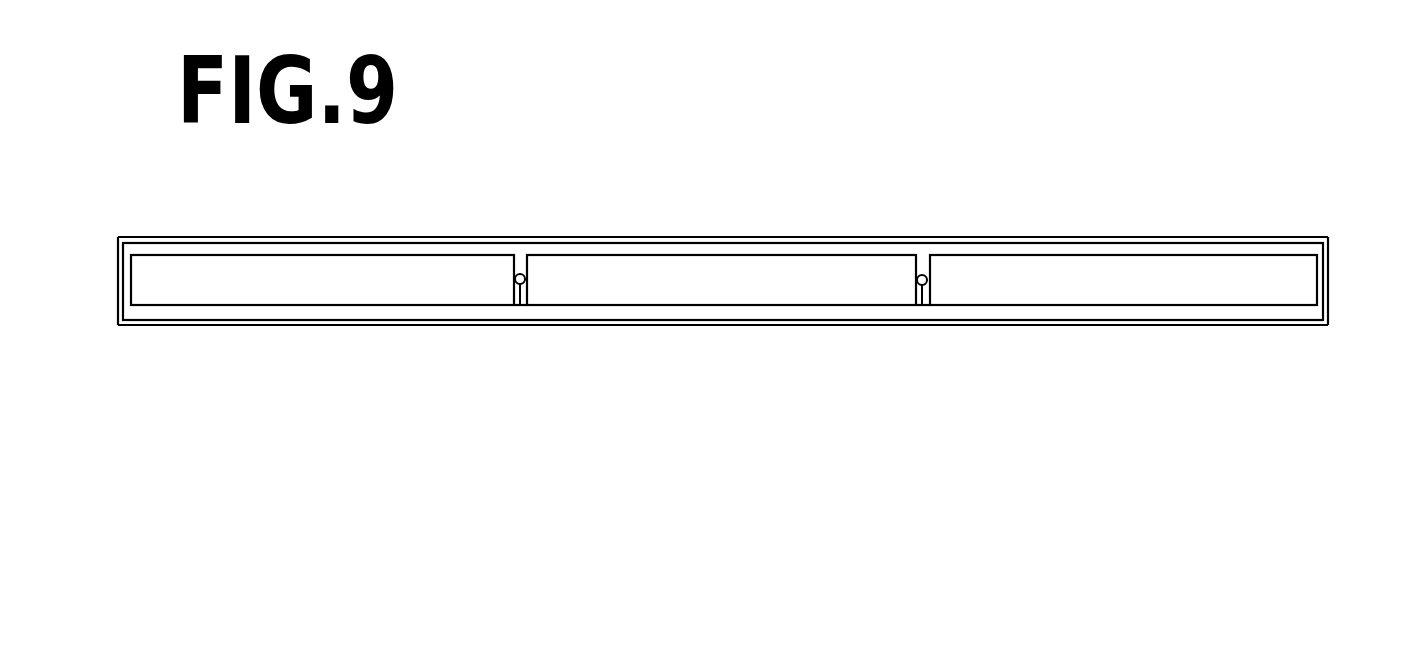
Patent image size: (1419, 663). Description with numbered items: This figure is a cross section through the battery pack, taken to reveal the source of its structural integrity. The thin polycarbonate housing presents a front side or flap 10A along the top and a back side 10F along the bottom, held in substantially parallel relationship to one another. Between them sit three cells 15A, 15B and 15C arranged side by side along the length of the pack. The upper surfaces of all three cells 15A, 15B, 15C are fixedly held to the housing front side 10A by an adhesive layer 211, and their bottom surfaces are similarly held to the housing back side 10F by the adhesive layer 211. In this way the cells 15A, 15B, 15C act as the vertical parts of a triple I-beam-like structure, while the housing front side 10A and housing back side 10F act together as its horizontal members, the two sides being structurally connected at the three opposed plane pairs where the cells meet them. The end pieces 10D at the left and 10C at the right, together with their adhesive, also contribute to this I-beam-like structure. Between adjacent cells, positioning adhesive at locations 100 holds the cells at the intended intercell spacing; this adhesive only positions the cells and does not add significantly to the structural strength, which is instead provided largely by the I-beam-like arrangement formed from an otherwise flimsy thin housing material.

The housing front side 10A is at (723, 177).
The housing back side 10F is at (723, 388).
The end piece 10D is at (74, 286).
The end piece 10C is at (1371, 288).
The adhesive layer 211 is at (723, 280).
The cell 15A is at (322, 322).
The cell 15B is at (721, 322).
The cell 15C is at (1123, 323).
The positioning adhesive locations 100 is at (756, 240).